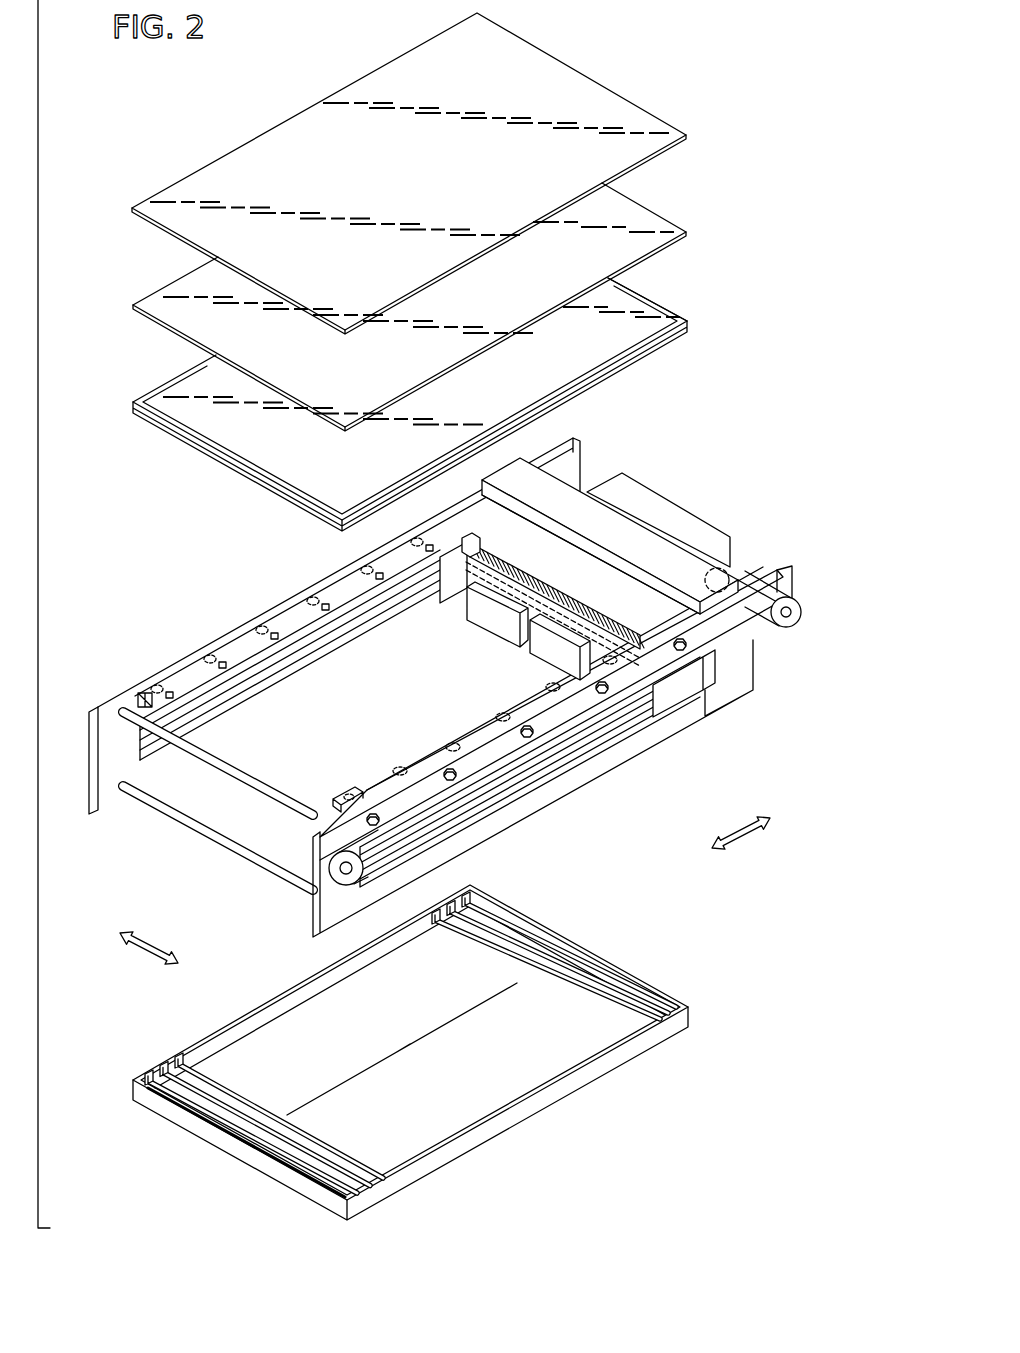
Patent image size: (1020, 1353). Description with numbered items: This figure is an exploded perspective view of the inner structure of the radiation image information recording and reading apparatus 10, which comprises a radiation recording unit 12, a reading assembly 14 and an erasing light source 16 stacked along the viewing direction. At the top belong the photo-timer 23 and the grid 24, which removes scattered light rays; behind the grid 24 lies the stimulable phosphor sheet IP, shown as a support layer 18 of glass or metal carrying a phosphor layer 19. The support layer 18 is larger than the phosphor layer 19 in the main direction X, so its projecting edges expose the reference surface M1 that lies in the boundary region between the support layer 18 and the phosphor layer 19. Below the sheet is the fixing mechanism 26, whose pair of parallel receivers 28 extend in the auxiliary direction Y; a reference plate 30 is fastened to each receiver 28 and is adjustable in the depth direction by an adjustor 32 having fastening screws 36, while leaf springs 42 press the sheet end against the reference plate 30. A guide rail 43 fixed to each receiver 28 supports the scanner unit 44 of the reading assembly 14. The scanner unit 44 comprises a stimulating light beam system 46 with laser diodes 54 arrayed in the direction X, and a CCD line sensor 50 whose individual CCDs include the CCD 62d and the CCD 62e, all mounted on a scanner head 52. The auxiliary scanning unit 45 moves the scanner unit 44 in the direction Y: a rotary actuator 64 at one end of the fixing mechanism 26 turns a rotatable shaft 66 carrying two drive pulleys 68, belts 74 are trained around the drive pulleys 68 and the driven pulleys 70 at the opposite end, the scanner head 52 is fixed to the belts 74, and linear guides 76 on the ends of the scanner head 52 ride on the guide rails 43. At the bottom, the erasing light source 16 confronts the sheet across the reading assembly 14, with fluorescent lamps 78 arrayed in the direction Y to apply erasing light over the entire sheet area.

The radiation image information recording and reading apparatus 10 is at (250, 80).
The radiation recording unit 12 is at (623, 70).
The reading assembly 14 is at (690, 477).
The erasing light source 16 is at (420, 1052).
The support layer 18 is at (240, 470).
The phosphor layer 19 is at (630, 302).
The photo-timer 23 is at (628, 117).
The grid 24 is at (628, 213).
The reference surface M1 is at (158, 388).
The stimulable phosphor sheet IP is at (652, 360).
The fixing mechanism 26 is at (176, 650).
The receivers 28 is at (140, 698).
The reference plate 30 is at (279, 623).
The adjustor 32 is at (439, 770).
The fastening screws 36 is at (382, 812).
The leaf springs 42 is at (344, 607).
The guide rail 43 is at (590, 724).
The scanner unit 44 is at (571, 511).
The auxiliary scanning unit 45 is at (784, 561).
The stimulating light beam system 46 is at (583, 585).
The CCD line sensor 50 is at (514, 642).
The scanner head 52 is at (450, 586).
The laser diodes 54 is at (547, 581).
The CCD 62d is at (490, 630).
The CCD 62e is at (547, 662).
The rotary actuator 64 is at (637, 510).
The rotatable shaft 66 is at (727, 569).
The drive pulleys 68 is at (781, 628).
The driven pulleys 70 is at (336, 882).
The belts 74 is at (268, 668).
The linear guides 76 is at (690, 695).
The fluorescent lamps 78 is at (598, 1020).